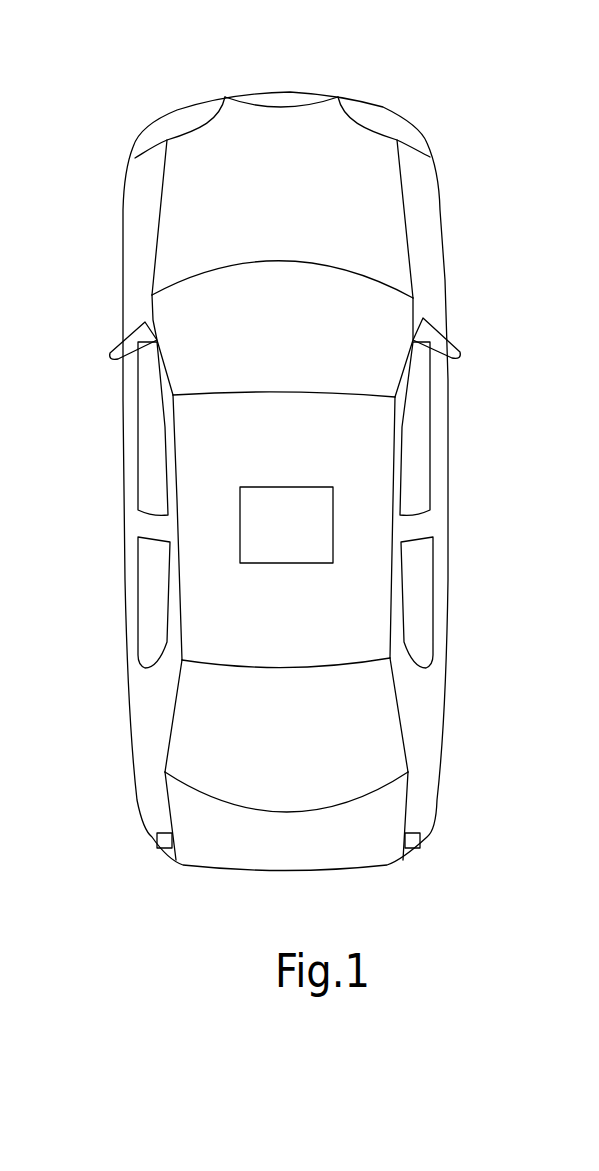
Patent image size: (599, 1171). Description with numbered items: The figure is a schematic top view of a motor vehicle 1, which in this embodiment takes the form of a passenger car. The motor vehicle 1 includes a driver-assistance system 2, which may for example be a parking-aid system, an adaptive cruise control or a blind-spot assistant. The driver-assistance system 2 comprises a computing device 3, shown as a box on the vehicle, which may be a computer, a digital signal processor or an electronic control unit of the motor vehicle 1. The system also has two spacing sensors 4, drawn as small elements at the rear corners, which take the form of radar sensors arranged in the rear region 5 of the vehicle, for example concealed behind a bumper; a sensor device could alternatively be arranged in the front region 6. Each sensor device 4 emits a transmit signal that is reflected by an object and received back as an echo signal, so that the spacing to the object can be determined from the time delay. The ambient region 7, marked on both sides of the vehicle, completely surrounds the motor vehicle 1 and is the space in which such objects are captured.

The motor vehicle 1 is at (280, 92).
The driver-assistance system 2 is at (210, 478).
The computing device 3 is at (317, 527).
The sensor device 4 is at (160, 848).
The rear region 5 is at (263, 892).
The front region 6 is at (382, 80).
The ambient region 7 is at (54, 319).